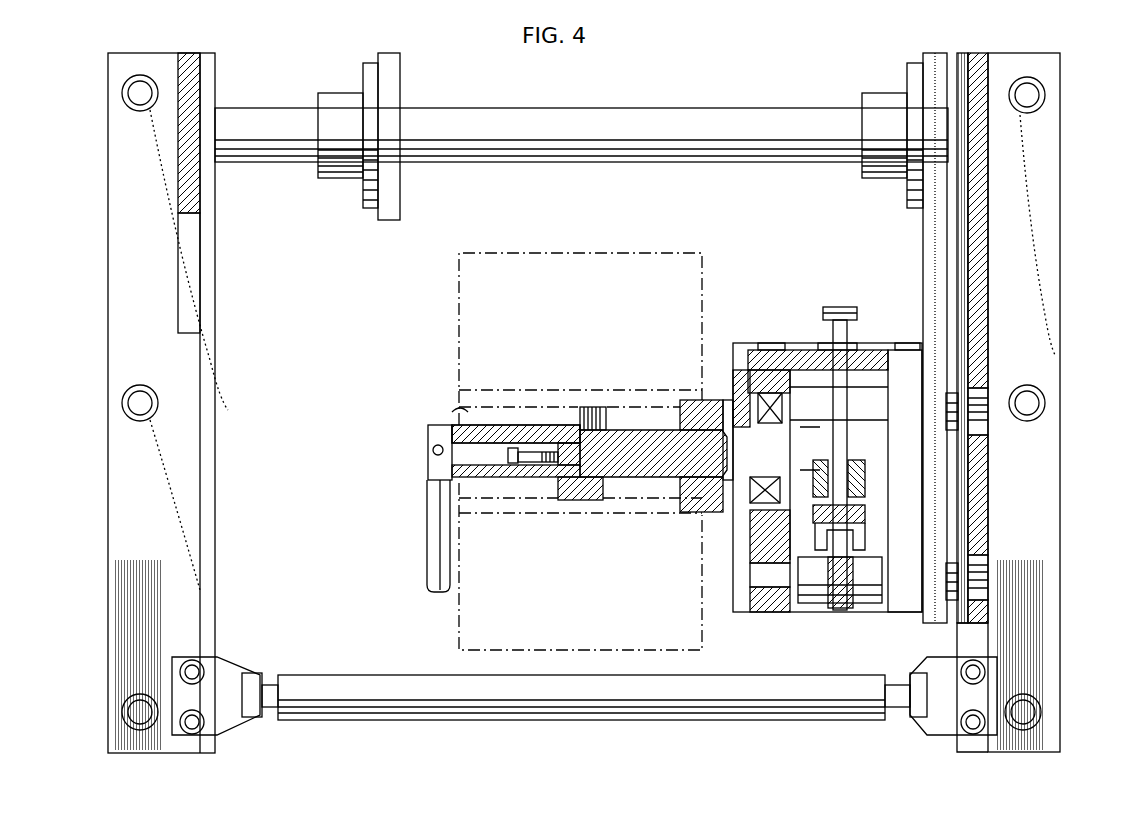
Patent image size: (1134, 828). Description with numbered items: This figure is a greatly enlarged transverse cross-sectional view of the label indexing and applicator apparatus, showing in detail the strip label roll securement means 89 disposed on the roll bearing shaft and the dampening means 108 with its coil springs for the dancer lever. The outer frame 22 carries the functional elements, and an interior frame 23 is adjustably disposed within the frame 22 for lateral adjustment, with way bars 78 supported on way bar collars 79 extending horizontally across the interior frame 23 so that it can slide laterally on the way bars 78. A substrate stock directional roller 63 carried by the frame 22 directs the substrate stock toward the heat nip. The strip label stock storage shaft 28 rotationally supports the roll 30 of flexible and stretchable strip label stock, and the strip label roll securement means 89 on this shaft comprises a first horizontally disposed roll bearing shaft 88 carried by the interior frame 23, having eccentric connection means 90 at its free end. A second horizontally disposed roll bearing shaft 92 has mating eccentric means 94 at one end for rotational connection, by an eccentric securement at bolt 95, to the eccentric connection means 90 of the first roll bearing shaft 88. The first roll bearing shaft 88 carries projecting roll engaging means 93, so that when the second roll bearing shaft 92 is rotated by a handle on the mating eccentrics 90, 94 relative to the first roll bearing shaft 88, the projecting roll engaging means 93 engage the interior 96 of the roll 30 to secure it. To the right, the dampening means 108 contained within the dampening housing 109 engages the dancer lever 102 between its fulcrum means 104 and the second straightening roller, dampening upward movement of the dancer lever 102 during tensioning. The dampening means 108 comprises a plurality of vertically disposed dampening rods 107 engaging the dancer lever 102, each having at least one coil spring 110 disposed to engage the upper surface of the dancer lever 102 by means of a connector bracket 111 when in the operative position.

The frame 22 is at (985, 292).
The interior frame 23 is at (938, 237).
The strip label stock storage shaft 28 is at (730, 478).
The roll 30 is at (570, 327).
The substrate stock directional roller 63 is at (690, 700).
The way bar 78 is at (661, 116).
The way bar collar 79 is at (338, 108).
The first roll bearing shaft 88 is at (643, 460).
The strip label roll securement means 89 is at (438, 530).
The eccentric connection means 90 is at (567, 457).
The second roll bearing shaft 92 is at (533, 480).
The projecting roll engaging means 93 is at (567, 480).
The mating eccentric means 94 is at (557, 432).
The bolt 95 is at (490, 462).
The interior of roll 96 is at (460, 412).
The dancer lever 102 is at (828, 605).
The fulcrum means 104 is at (870, 585).
The dampening rod 107 is at (840, 305).
The dampening means 108 is at (798, 327).
The dampening housing 109 is at (872, 352).
The coil spring 110 is at (867, 507).
The connector bracket 111 is at (867, 515).